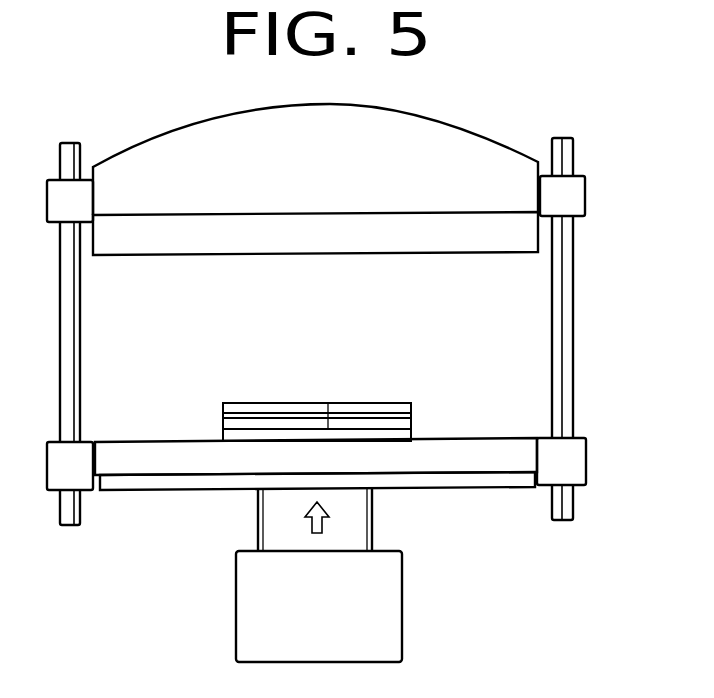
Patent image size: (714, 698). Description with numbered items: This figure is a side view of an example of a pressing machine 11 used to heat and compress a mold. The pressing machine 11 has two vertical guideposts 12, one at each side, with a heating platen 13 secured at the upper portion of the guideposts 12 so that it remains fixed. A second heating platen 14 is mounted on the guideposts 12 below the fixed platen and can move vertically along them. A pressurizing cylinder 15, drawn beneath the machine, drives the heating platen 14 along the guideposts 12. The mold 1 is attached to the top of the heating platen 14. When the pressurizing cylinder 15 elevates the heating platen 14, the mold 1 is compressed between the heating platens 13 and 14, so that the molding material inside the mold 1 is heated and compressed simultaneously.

The mold 1 is at (251, 399).
The pressing machine 11 is at (466, 133).
The guideposts 12 is at (66, 155).
The heating platen 13 is at (311, 241).
The heating platen 14 is at (447, 447).
The pressurizing cylinder 15 is at (387, 645).